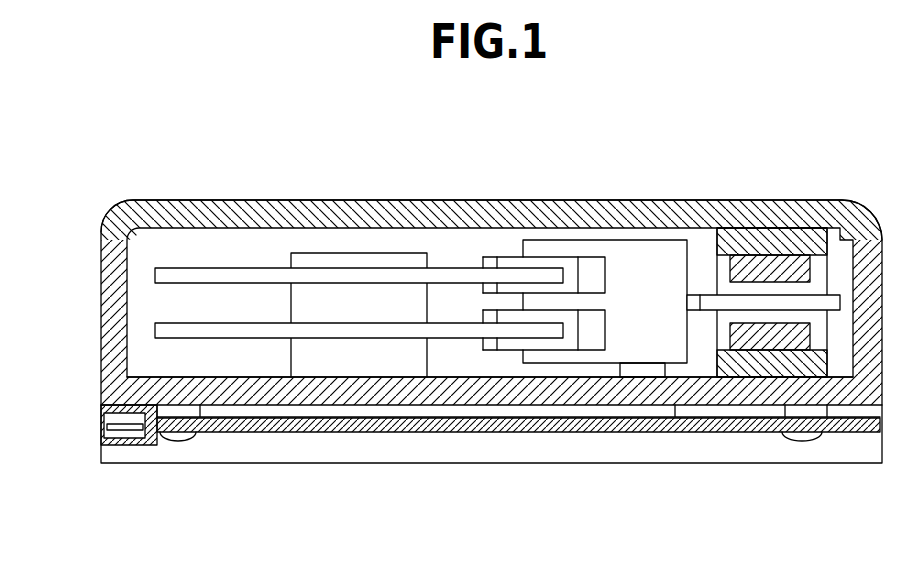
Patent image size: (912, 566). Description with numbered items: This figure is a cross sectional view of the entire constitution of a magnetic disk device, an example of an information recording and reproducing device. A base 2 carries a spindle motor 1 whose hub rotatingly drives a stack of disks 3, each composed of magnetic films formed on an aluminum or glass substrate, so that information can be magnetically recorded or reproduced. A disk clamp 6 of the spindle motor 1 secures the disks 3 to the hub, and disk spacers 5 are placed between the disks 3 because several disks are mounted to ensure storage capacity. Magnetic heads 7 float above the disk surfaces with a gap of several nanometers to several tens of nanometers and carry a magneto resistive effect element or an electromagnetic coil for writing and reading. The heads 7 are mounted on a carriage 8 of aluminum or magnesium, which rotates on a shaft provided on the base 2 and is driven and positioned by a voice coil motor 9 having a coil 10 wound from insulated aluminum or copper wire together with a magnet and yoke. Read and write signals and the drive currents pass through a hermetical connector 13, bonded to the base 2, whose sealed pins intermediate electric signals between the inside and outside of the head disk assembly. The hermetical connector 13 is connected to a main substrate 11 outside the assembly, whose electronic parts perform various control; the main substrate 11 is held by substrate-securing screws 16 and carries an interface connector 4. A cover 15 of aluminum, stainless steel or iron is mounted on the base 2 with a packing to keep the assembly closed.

The spindle motor 1 is at (365, 357).
The base 2 is at (101, 324).
The disks 3 is at (200, 268).
The interface connector 4 is at (106, 442).
The disk spacers 5 is at (291, 303).
The disk clamp 6 is at (323, 262).
The magnetic heads 7 is at (483, 258).
The carriage 8 is at (637, 268).
The voice coil motor 9 is at (755, 243).
The coil 10 is at (836, 292).
The main substrate 11 is at (282, 433).
The hermetical connector 13 is at (713, 392).
The cover 15 is at (215, 222).
The substrate-securing screws 16 is at (166, 441).